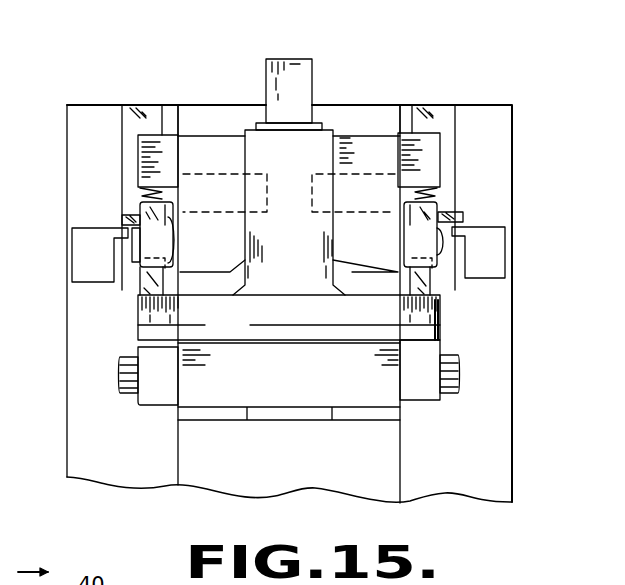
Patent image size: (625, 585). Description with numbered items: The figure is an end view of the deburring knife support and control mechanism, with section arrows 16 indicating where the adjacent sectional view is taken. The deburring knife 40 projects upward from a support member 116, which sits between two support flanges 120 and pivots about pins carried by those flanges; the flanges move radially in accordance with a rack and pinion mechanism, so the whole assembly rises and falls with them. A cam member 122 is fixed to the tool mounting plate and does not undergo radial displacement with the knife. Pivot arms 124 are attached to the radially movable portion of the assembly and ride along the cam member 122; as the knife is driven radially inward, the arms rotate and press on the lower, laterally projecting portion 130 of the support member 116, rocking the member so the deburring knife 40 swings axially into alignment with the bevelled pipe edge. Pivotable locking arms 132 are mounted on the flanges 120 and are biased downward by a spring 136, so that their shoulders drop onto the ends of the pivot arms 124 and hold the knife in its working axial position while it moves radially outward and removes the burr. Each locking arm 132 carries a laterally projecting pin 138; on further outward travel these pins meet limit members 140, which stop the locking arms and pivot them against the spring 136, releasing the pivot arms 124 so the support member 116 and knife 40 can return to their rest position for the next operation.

The section line for FIG. 16 is at (452, 86).
The deburring knife 40 is at (291, 58).
The support member 116 is at (325, 136).
The support flanges 120 is at (213, 137).
The cam member 122 is at (148, 103).
The pivot arms 124 is at (158, 400).
The lower, laterally projecting portion 130 is at (140, 310).
The locking arms 132 is at (135, 250).
The spring 136 is at (150, 196).
The laterally projecting pins 138 is at (121, 217).
The limit members 140 is at (80, 224).